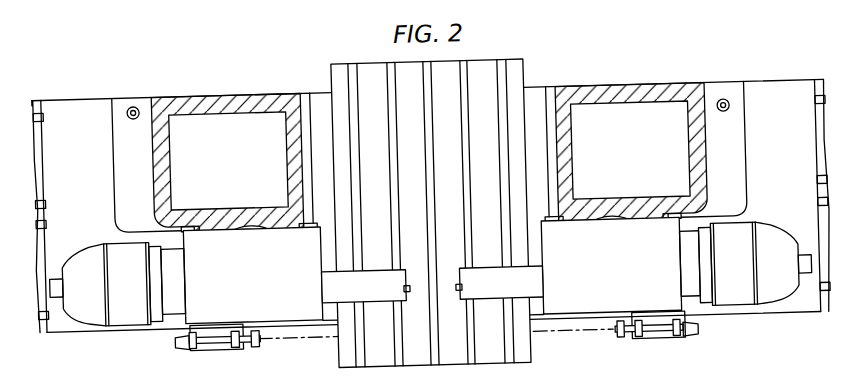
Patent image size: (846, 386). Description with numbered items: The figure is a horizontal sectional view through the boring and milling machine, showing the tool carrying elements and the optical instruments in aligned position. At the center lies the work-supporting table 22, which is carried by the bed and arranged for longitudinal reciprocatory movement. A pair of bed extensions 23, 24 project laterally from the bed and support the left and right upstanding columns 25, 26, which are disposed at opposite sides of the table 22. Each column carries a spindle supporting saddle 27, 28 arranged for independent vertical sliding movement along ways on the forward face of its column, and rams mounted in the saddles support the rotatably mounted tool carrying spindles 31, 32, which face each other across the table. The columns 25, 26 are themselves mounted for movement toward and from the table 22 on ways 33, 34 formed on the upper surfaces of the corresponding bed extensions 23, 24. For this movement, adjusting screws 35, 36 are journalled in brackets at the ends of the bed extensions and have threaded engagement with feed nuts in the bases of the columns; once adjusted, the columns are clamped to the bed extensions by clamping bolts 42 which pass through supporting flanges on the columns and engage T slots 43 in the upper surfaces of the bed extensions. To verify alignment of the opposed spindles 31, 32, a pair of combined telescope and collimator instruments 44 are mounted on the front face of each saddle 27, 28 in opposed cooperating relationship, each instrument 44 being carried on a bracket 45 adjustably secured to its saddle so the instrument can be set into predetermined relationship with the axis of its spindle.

The work-supporting table 22 is at (526, 88).
The bed extension 23 is at (40, 323).
The bed extension 24 is at (820, 319).
The column 25 is at (235, 91).
The column 26 is at (640, 90).
The saddle 27 is at (326, 262).
The saddle 28 is at (542, 254).
The tool carrying spindle 31 is at (402, 267).
The tool carrying spindle 32 is at (460, 268).
The ways 33 is at (42, 195).
The ways 34 is at (819, 190).
The adjusting screw 35 is at (42, 214).
The adjusting screw 36 is at (820, 212).
The clamping bolt 42 is at (137, 99).
The T slot 43 is at (40, 107).
The combined telescope and collimator instrument 44 is at (247, 350).
The bracket 45 is at (225, 316).